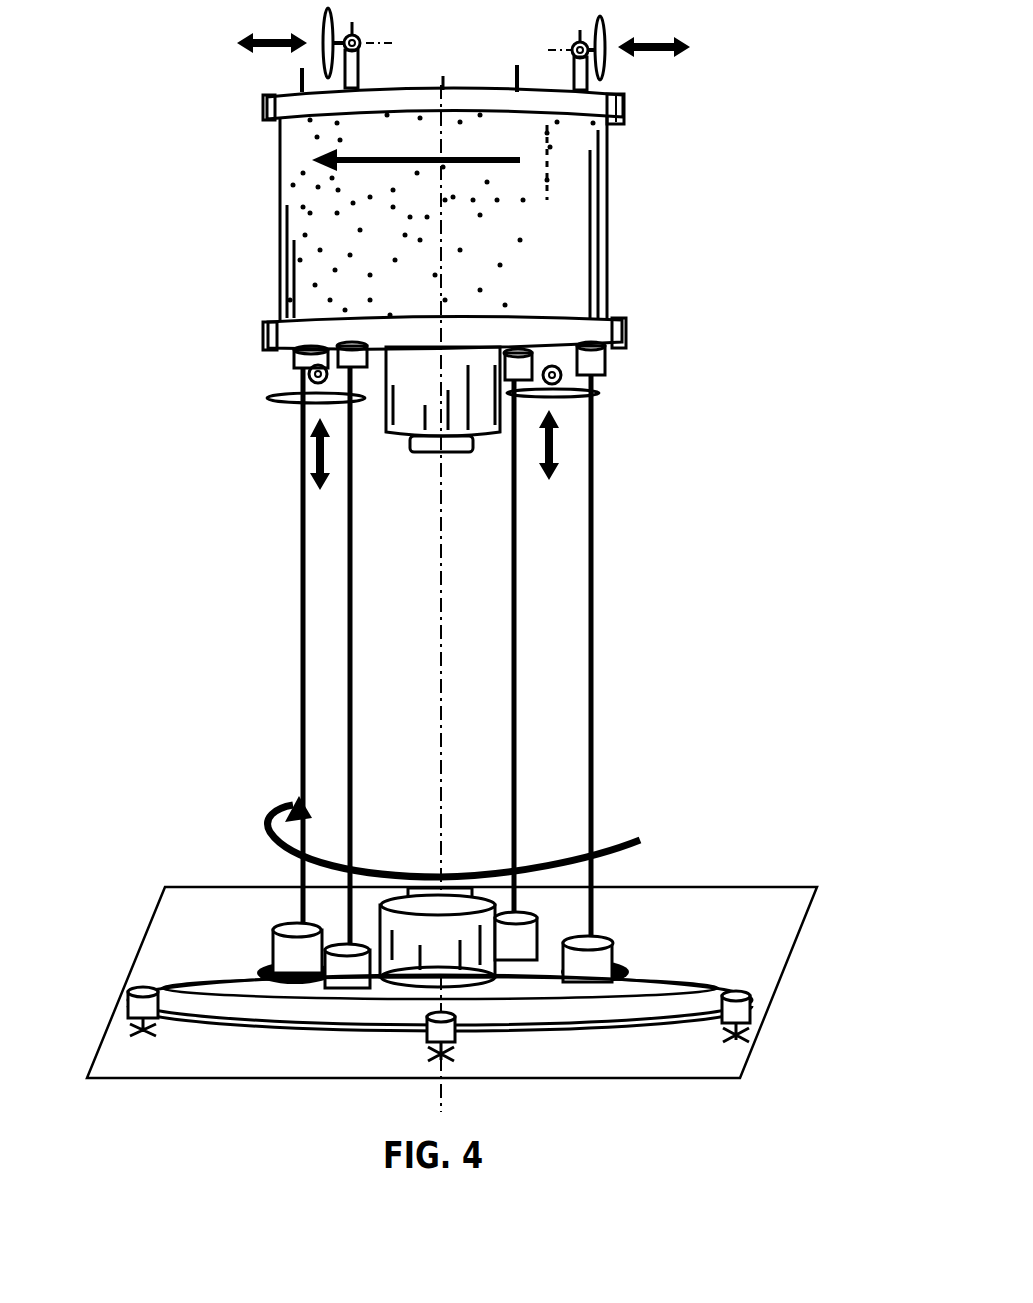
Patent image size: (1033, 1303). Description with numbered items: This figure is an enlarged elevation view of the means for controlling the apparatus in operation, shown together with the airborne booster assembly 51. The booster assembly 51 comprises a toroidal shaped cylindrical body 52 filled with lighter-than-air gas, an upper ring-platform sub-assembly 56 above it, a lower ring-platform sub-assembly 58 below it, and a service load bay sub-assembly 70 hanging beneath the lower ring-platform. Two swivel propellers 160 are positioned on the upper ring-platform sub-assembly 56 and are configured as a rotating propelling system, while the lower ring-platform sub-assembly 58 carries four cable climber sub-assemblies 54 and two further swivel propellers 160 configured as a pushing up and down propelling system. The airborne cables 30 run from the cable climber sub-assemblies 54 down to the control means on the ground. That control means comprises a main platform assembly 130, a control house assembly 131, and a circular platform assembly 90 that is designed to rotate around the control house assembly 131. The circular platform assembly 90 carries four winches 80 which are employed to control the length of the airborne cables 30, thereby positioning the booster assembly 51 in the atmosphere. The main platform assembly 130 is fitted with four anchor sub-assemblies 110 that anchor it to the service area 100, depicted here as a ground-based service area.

The swivel propellers 160 is at (302, 66).
The upper ring-platform sub-assembly 56 is at (605, 96).
The toroidal shaped cylindrical body 52 is at (317, 230).
The booster assembly 51 is at (537, 257).
The lower ring-platform sub-assembly 58 is at (307, 336).
The cable climber sub-assemblies 54 is at (294, 358).
The service load bay sub-assembly 70 is at (427, 413).
The airborne cables 30 is at (300, 678).
The winches 80 is at (275, 933).
The control house assembly 131 is at (420, 955).
The circular platform assembly 90 is at (618, 990).
The service area 100 is at (582, 1050).
The anchor sub-assemblies 110 is at (140, 990).
The main platform assembly 130 is at (470, 1017).